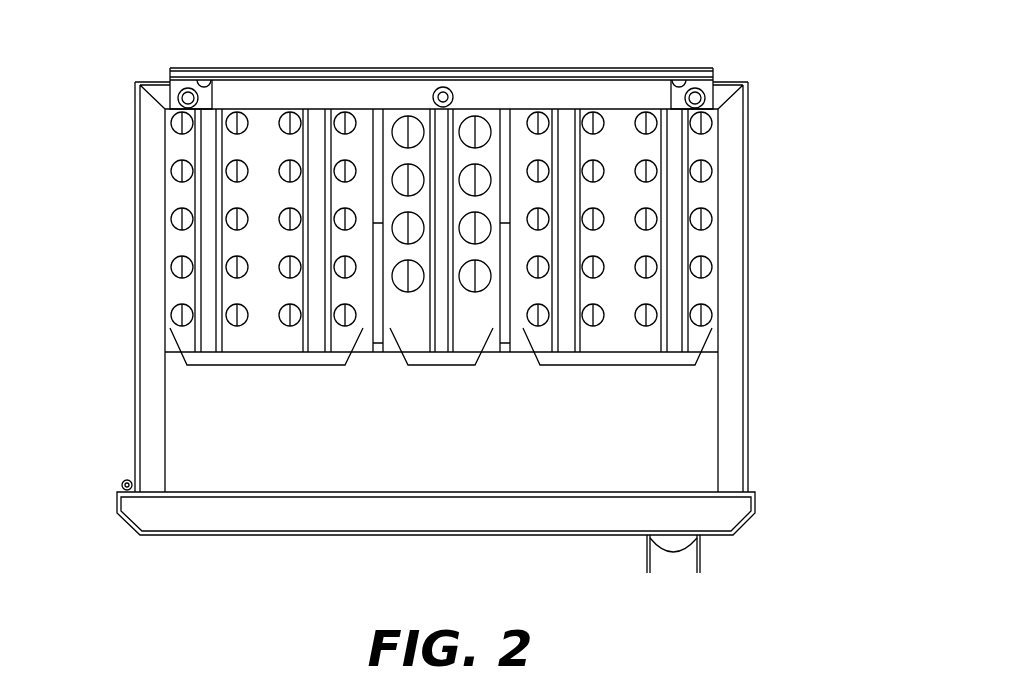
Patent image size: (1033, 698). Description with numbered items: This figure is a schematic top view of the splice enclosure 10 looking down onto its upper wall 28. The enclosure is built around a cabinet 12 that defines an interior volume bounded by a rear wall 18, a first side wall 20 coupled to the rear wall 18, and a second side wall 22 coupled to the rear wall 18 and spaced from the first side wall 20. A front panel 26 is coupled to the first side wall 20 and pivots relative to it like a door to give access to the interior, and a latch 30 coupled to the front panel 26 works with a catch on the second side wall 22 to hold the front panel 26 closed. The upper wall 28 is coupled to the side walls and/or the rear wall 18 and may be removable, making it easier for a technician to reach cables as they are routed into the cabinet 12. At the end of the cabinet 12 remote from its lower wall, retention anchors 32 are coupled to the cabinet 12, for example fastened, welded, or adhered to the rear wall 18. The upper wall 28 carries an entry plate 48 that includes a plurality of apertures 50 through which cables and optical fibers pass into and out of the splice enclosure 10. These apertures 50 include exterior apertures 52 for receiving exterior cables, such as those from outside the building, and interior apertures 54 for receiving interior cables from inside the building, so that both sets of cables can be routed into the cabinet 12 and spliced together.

The splice enclosure 10 is at (100, 140).
The cabinet 12 is at (155, 78).
The rear wall 18 is at (630, 120).
The first side wall 20 is at (135, 318).
The second side wall 22 is at (748, 300).
The front panel 26 is at (218, 517).
The upper wall 28 is at (710, 197).
The latch 30 is at (700, 563).
The retention anchors 32 is at (207, 118).
The entry plate 48 is at (520, 127).
The apertures 50 is at (245, 125).
The exterior apertures 52 is at (263, 367).
The interior apertures 54 is at (443, 367).